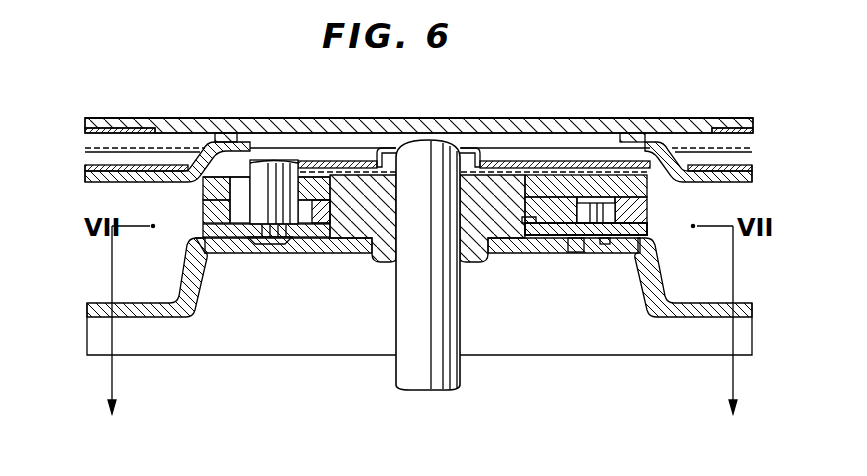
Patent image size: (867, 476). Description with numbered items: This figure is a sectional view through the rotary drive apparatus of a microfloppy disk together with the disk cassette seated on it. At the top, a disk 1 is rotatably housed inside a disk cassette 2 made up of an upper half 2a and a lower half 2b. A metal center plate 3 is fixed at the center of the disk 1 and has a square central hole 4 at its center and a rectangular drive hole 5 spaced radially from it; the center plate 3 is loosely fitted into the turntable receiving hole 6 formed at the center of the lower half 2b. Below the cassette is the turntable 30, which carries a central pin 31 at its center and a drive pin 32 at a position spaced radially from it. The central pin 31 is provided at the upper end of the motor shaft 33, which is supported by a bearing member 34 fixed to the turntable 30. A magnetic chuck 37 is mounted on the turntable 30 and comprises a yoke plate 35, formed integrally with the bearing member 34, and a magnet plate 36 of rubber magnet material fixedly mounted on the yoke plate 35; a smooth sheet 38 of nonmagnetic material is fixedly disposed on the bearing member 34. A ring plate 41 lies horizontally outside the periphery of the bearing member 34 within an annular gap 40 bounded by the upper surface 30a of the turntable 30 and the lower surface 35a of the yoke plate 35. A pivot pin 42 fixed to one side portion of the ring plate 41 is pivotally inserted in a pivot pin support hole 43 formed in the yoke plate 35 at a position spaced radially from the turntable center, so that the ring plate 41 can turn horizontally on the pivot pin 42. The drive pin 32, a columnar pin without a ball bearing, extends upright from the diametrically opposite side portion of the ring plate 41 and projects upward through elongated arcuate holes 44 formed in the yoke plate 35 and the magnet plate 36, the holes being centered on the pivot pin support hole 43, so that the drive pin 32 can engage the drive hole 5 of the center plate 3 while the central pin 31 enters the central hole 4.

The disk 1 is at (113, 135).
The disk cassette 2 is at (143, 102).
The upper half 2a is at (176, 120).
The lower half 2b is at (98, 184).
The center plate 3 is at (568, 163).
The central hole 4 is at (388, 165).
The drive hole 5 is at (316, 146).
The turntable receiving hole 6 is at (676, 178).
The turntable 30 is at (267, 256).
The upper surface 30a is at (542, 238).
The central pin 31 is at (424, 147).
The drive pin 32 is at (262, 174).
The motor shaft 33 is at (410, 358).
The bearing member 34 is at (483, 228).
The yoke plate 35 is at (643, 218).
The lower surface 35a is at (524, 222).
The magnet plate 36 is at (626, 188).
The magnetic chuck 37 is at (651, 197).
The smooth sheet 38 is at (353, 160).
The annular gap 40 is at (309, 232).
The ring plate 41 is at (576, 245).
The pivot pin 42 is at (591, 212).
The pivot pin support hole 43 is at (603, 243).
The elongated arcuate holes 44 is at (302, 230).